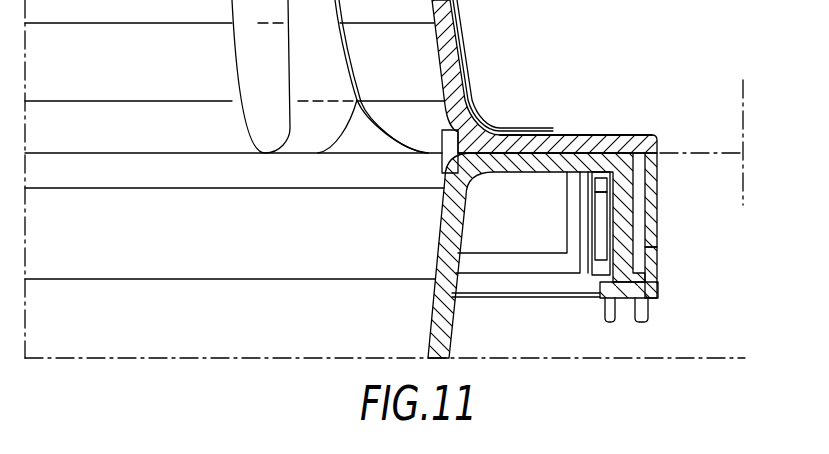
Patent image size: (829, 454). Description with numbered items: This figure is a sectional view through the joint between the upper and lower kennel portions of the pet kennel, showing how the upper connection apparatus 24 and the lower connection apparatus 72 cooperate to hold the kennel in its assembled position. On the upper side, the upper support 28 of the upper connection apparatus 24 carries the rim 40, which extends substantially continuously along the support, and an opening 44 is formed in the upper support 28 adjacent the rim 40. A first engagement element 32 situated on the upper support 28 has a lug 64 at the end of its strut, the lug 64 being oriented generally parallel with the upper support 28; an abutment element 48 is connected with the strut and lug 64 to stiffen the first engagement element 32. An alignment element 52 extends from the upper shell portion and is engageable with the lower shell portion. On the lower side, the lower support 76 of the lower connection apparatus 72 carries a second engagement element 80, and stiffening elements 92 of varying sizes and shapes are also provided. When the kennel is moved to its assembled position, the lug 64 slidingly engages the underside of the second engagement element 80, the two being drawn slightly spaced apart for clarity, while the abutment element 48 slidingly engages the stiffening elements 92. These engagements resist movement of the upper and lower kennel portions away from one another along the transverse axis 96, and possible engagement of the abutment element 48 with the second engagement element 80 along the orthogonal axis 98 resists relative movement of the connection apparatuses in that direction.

The upper connection apparatus 24 is at (560, 112).
The upper support 28 is at (497, 132).
The lower support 76 is at (525, 150).
The opening 44 is at (600, 143).
The lower connection apparatus 72 is at (640, 145).
The rim 40 is at (660, 152).
The transverse axis 96 is at (742, 91).
The orthogonal axis 98 is at (718, 155).
The second engagement element 80 is at (658, 246).
The alignment element 52 is at (446, 176).
The stiffening element 92 is at (510, 254).
The abutment element 48 is at (597, 274).
The first engagement element 32 is at (581, 302).
The lug 64 is at (630, 300).